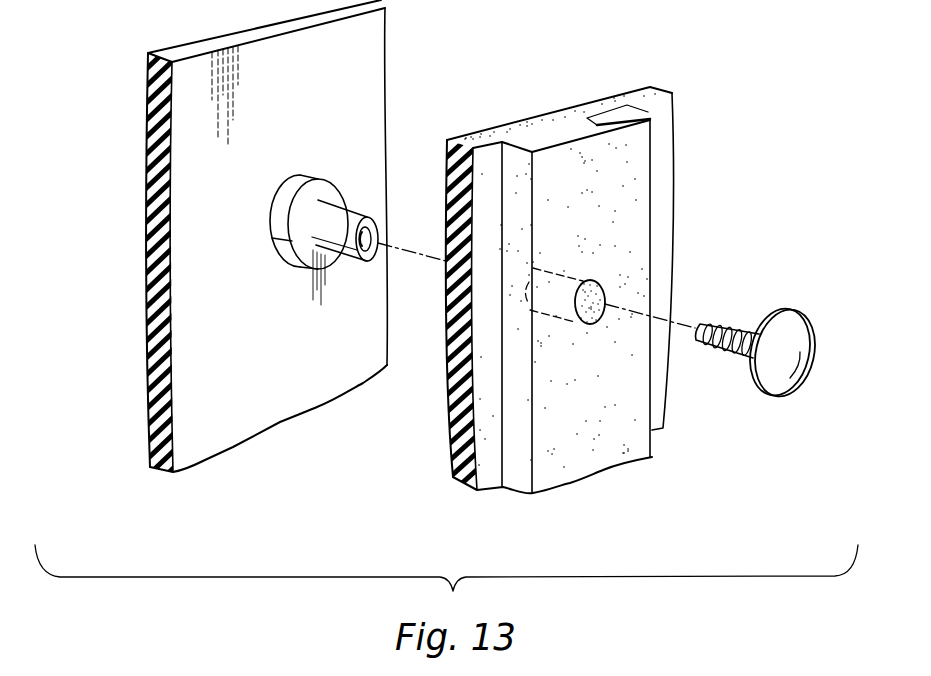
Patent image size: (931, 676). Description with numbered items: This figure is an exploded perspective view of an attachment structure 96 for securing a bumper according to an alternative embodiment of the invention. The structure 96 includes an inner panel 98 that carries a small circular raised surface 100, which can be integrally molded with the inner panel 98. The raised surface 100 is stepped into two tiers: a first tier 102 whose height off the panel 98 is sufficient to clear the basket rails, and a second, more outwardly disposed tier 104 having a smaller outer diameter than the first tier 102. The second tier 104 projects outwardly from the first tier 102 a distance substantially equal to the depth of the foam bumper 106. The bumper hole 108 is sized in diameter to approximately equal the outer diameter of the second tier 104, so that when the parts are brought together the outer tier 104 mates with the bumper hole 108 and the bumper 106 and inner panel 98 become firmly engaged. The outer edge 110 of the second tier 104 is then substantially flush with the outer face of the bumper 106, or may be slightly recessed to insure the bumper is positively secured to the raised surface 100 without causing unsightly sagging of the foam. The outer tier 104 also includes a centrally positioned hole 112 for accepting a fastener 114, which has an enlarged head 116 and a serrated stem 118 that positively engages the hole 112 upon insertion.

The attachment structure 96 is at (562, 45).
The inner panel 98 is at (293, 390).
The raised surface 100 is at (353, 187).
The first tier 102 is at (292, 267).
The second tier 104 is at (337, 262).
The foam bumper 106 is at (648, 236).
The bumper hole 108 is at (603, 292).
The outer edge 110 is at (370, 262).
The hole 112 is at (370, 238).
The fastener 114 is at (787, 306).
The enlarged head 116 is at (797, 382).
The serrated stem 118 is at (728, 356).